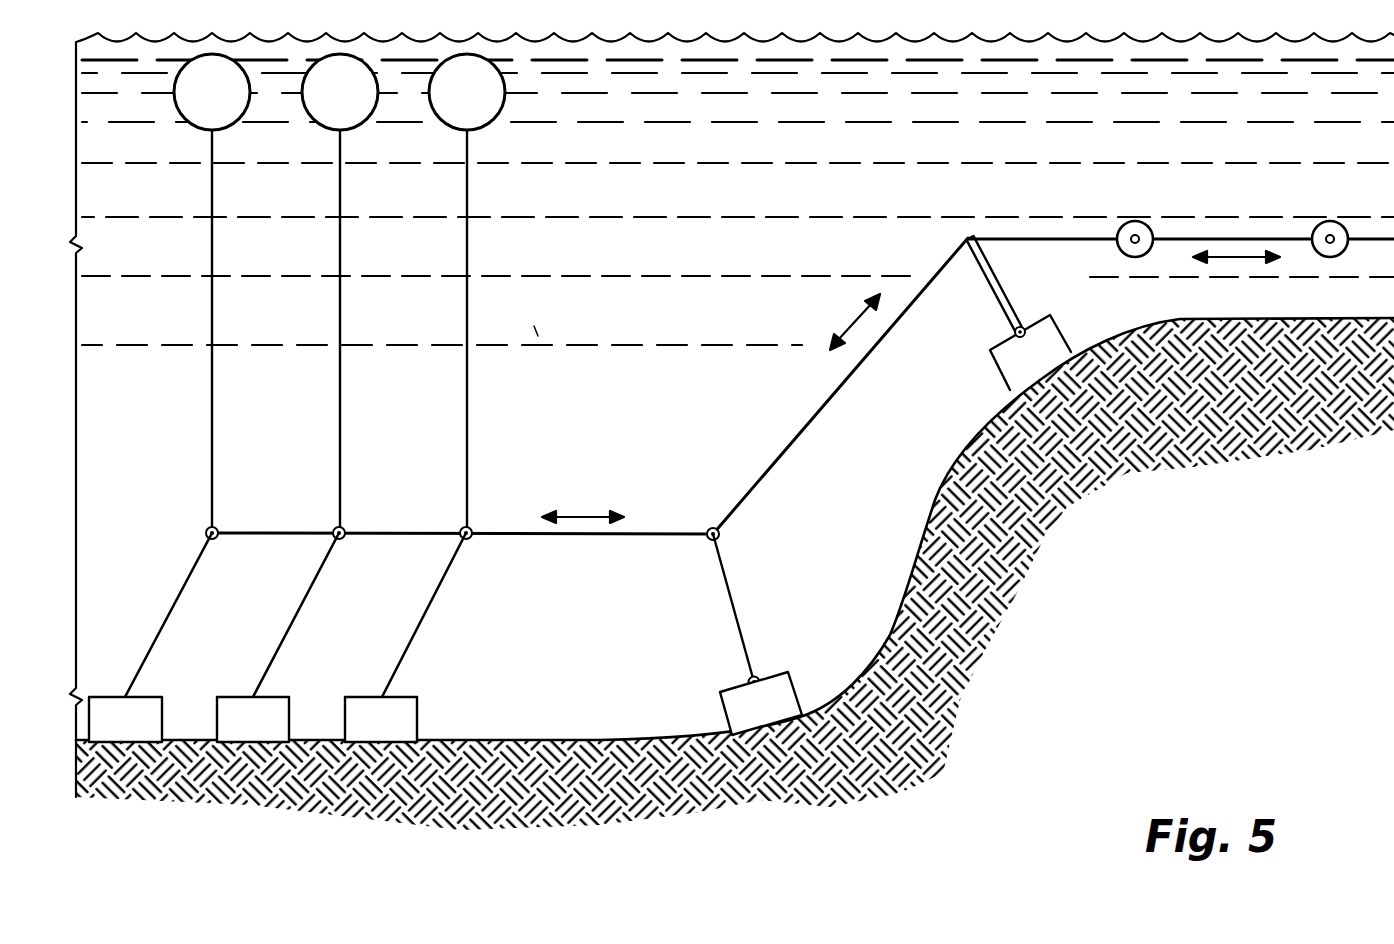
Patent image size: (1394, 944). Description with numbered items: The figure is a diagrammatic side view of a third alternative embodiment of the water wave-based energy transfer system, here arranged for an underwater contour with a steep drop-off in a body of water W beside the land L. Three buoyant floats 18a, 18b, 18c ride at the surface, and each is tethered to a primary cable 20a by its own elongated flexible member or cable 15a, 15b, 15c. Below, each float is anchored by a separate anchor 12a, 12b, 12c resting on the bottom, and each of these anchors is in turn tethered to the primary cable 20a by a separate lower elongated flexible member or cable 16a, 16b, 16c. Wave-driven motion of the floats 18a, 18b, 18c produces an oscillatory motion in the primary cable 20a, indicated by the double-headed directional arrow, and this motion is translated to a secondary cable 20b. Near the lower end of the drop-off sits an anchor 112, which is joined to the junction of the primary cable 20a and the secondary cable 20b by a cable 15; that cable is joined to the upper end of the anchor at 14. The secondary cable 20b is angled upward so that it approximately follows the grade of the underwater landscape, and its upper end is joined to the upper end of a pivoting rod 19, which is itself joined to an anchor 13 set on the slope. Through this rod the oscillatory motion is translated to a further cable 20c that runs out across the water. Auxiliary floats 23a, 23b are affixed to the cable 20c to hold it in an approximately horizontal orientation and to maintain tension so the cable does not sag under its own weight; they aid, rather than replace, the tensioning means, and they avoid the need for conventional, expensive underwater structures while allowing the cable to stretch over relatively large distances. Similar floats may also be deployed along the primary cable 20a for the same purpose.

The anchor 12a is at (147, 733).
The anchor 12b is at (275, 733).
The anchor 12c is at (403, 733).
The anchor 112 is at (782, 717).
The anchor 13 is at (1050, 366).
The upper end of anchor 14 is at (758, 678).
The cable 15 is at (725, 570).
The elongated flexible member or cable 15a is at (212, 402).
The elongated flexible member or cable 15b is at (340, 357).
The elongated flexible member or cable 15c is at (467, 400).
The lower elongated flexible member or cable 16a is at (160, 643).
The lower elongated flexible member or cable 16b is at (307, 600).
The lower elongated flexible member or cable 16c is at (413, 637).
The float 18a is at (237, 108).
The float 18b is at (365, 108).
The float 18c is at (492, 108).
The pivoting rod 19 is at (1008, 283).
The primary cable 20a is at (410, 532).
The secondary cable 20b is at (802, 430).
The cable 20c is at (1233, 238).
The auxiliary float 23a is at (1130, 222).
The auxiliary float 23b is at (1313, 225).
The body of water W is at (603, 257).
The land L is at (1062, 482).